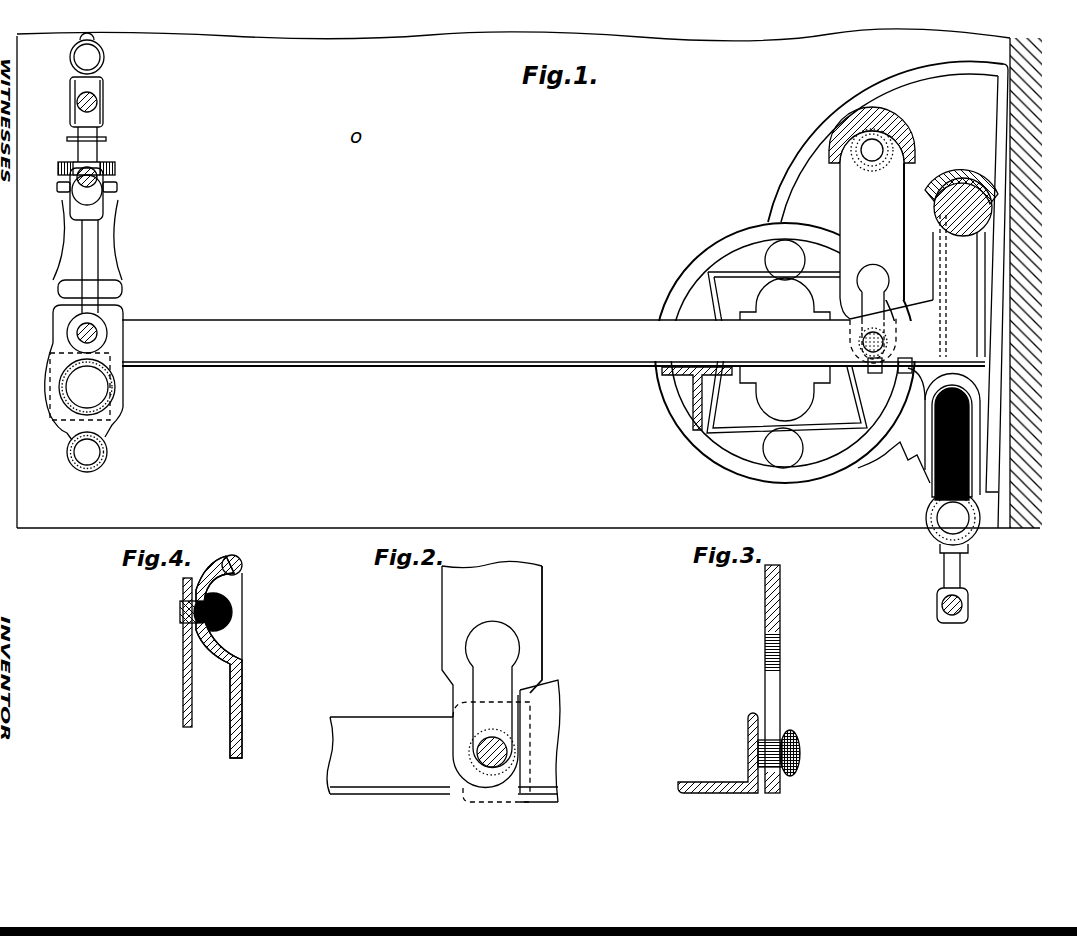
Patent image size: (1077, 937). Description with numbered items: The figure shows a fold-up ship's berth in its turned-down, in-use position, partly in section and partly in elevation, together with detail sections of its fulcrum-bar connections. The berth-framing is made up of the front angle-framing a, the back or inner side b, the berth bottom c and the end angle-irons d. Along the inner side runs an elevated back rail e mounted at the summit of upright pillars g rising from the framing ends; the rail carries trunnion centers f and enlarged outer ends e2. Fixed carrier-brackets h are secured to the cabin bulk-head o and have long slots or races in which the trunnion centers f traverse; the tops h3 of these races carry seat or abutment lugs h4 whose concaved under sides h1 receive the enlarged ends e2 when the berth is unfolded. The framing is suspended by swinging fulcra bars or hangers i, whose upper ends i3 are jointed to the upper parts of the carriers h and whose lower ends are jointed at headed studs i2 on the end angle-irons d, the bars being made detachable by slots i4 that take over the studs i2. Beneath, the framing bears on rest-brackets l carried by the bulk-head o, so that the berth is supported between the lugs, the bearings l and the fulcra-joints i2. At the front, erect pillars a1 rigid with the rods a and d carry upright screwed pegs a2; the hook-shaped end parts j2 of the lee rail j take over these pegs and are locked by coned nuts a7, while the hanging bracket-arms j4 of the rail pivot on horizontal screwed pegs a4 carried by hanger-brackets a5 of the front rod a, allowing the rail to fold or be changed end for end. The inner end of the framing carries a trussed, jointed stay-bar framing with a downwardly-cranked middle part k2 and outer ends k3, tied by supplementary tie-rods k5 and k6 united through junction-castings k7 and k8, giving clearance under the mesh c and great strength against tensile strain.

In FIG. 1, the front angle-framing a is at (100, 386).
In FIG. 1, the erect pillars or cast brackets a1 is at (72, 256).
In FIG. 1, the upright screwed pegs or stalks a2 is at (66, 148).
In FIG. 1, the horizontal screwed pegs a4 is at (95, 451).
In FIG. 1, the hanger-brackets a5 is at (108, 402).
In FIG. 1, the coned nuts a7 is at (108, 163).
In FIG. 1, the back or inner side of berth b is at (970, 354).
In FIG. 2, the back or inner side of berth b is at (451, 741).
In FIG. 1, the berth bottom c is at (320, 349).
In FIG. 1, the end angle-irons d is at (486, 303).
In FIG. 1, the elevated back rail e is at (1000, 227).
In FIG. 1, the enlarged outer ends of the back rail e2 is at (1000, 210).
In FIG. 1, the trunnion centers f is at (966, 176).
In FIG. 1, the upright pillars g is at (959, 286).
In FIG. 1, the fixed carrier-brackets h is at (888, 294).
In FIG. 4, the fixed carrier-brackets h is at (230, 660).
In FIG. 3, the fixed carrier-brackets h is at (719, 746).
In FIG. 1, the concaved under sides of the lugs h1 is at (938, 180).
In FIG. 1, the tops of the races h3 is at (990, 242).
In FIG. 1, the seat or abutment lugs h4 is at (997, 188).
In FIG. 1, the swinging fulcra bars or hangers i is at (872, 247).
In FIG. 4, the swinging fulcra bars or hangers i is at (182, 697).
In FIG. 2, the swinging fulcra bars or hangers i is at (492, 681).
In FIG. 3, the swinging fulcra bars or hangers i is at (781, 679).
In FIG. 1, the lower joints or studs i2 is at (861, 343).
In FIG. 2, the lower joints or studs i2 is at (477, 754).
In FIG. 3, the lower joints or studs i2 is at (785, 741).
In FIG. 1, the upper ends of fulcra bars i3 is at (862, 149).
In FIG. 4, the upper ends of fulcra bars i3 is at (181, 606).
In FIG. 1, the slots i4 is at (874, 282).
In FIG. 2, the slots i4 is at (499, 644).
In FIG. 1, the lee rail j is at (116, 200).
In FIG. 1, the slotted or hook-shaped end parts j2 is at (128, 198).
In FIG. 1, the hanging bracket-arms j4 is at (104, 468).
In FIG. 1, the downwardly-cranked middle part k2 is at (935, 507).
In FIG. 1, the outer ends of stay-bar k3 is at (919, 434).
In FIG. 1, the supplementary tie-rod k5 is at (968, 612).
In FIG. 1, the supplementary tie-rod k6 is at (962, 576).
In FIG. 1, the junction-casting k7 is at (936, 532).
In FIG. 1, the junction-casting k8 is at (952, 622).
In FIG. 1, the rest-brackets l is at (690, 398).